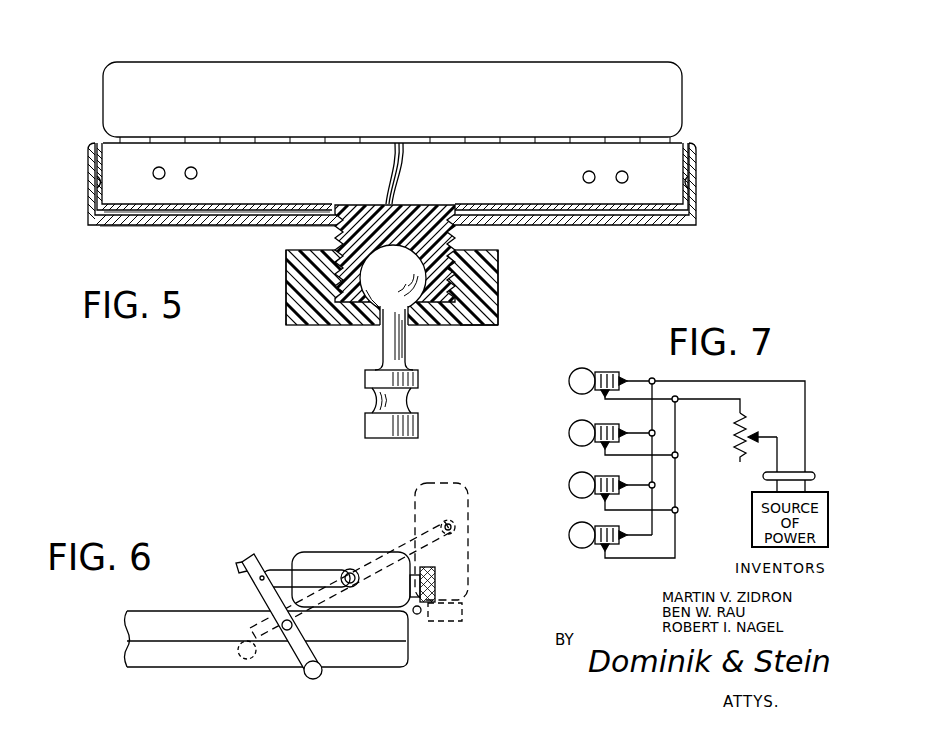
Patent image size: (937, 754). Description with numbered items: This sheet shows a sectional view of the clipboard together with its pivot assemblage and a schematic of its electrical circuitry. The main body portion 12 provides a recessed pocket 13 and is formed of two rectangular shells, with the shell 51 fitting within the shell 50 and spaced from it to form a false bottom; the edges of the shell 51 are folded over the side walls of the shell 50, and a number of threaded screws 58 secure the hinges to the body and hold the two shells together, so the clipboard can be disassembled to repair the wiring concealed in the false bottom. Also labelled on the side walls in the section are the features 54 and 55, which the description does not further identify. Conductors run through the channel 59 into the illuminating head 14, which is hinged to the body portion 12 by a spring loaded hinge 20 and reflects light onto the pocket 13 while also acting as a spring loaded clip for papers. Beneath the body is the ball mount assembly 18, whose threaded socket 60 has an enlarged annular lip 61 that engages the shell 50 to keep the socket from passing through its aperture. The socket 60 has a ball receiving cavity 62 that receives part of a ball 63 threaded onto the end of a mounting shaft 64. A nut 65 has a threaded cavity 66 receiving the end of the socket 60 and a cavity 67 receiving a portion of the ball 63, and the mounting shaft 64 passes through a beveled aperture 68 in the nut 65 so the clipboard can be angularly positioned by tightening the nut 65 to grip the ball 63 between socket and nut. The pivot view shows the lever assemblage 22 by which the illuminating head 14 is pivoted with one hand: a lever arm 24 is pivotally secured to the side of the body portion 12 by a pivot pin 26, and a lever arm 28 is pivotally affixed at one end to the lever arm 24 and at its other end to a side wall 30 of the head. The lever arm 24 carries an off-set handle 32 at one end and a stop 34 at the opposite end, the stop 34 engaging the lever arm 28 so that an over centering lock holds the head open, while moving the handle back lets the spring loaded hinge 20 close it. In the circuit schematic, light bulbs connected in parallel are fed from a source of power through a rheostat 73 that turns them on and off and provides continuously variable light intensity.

In FIG. 5, the main body portion 12 is at (698, 211).
In FIG. 6, the main body portion 12 is at (398, 633).
In FIG. 5, the recessed pocket 13 is at (690, 160).
In FIG. 5, the illuminating head 14 is at (247, 62).
In FIG. 6, the illuminating head 14 is at (315, 552).
In FIG. 5, the ball mount assembly 18 is at (278, 317).
In FIG. 6, the spring loaded hinge 20 is at (421, 626).
In FIG. 6, the lever assemblage 22 is at (245, 546).
In FIG. 6, the lever arm 24 is at (316, 652).
In FIG. 6, the pivot pin 26 is at (277, 620).
In FIG. 6, the lever arm 28 is at (282, 567).
In FIG. 6, the side wall 30 is at (352, 588).
In FIG. 6, the off-set handle 32 is at (310, 679).
In FIG. 6, the stop 34 is at (240, 565).
In FIG. 5, the shell 50 is at (213, 226).
In FIG. 5, the shell 51 is at (172, 212).
In FIG. 5, the wall bead 54 is at (93, 185).
In FIG. 5, the wall liner 55 is at (698, 186).
In FIG. 5, the threaded screws 58 is at (190, 167).
In FIG. 5, the channel 59 is at (130, 212).
In FIG. 5, the threaded socket 60 is at (452, 235).
In FIG. 5, the annular lip 61 is at (481, 184).
In FIG. 5, the ball receiving cavity 62 is at (288, 255).
In FIG. 5, the ball 63 is at (368, 297).
In FIG. 5, the mounting shaft 64 is at (405, 342).
In FIG. 5, the nut 65 is at (500, 297).
In FIG. 7, the nut 65 is at (815, 474).
In FIG. 5, the threaded cavity 66 is at (470, 303).
In FIG. 5, the cavity 67 is at (372, 306).
In FIG. 5, the beveled aperture 68 is at (373, 326).
In FIG. 7, the rheostat 73 is at (734, 428).